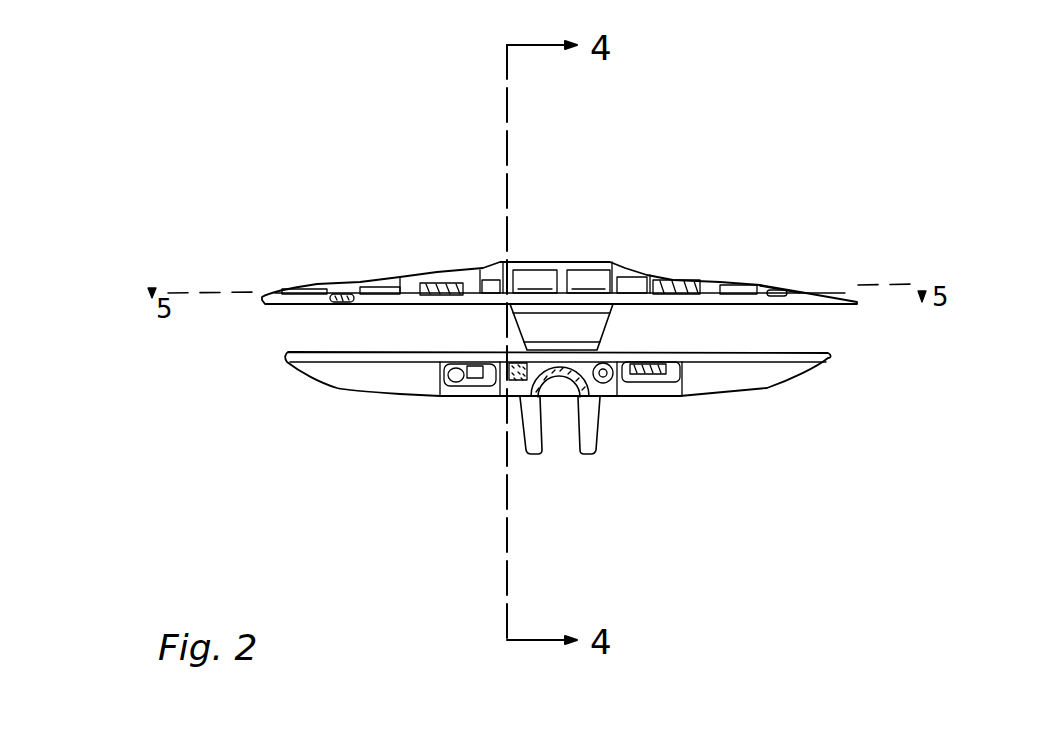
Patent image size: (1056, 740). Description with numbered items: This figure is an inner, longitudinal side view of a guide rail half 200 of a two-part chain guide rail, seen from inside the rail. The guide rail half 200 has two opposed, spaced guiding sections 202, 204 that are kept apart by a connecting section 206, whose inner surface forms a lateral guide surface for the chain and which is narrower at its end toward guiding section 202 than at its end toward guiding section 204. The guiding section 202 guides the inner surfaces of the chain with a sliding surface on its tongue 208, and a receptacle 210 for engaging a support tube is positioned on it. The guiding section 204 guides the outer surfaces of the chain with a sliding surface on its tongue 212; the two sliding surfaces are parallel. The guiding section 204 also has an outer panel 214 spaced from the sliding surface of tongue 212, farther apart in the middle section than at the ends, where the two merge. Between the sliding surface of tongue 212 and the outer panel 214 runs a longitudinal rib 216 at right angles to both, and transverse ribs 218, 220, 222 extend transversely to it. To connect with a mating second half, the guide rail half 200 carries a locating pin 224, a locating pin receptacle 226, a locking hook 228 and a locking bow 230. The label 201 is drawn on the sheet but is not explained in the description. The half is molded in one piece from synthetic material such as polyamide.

The guide rail half 200 is at (312, 276).
The lower blade member 201 is at (304, 389).
The guiding section 202 is at (368, 384).
The guiding section 204 is at (740, 283).
The connecting section 206 is at (527, 330).
The tongue 208 is at (350, 352).
The receptacle 210 is at (557, 447).
The tongue 212 is at (745, 306).
The outer panel 214 is at (537, 265).
The longitudinal rib 216 is at (607, 275).
The transverse rib 218 is at (390, 283).
The transverse rib 220 is at (497, 280).
The transverse rib 222 is at (579, 270).
The locating pin 224 is at (510, 398).
The locating pin receptacle 226 is at (617, 386).
The locking hook 228 is at (657, 385).
The locking bow 230 is at (452, 387).